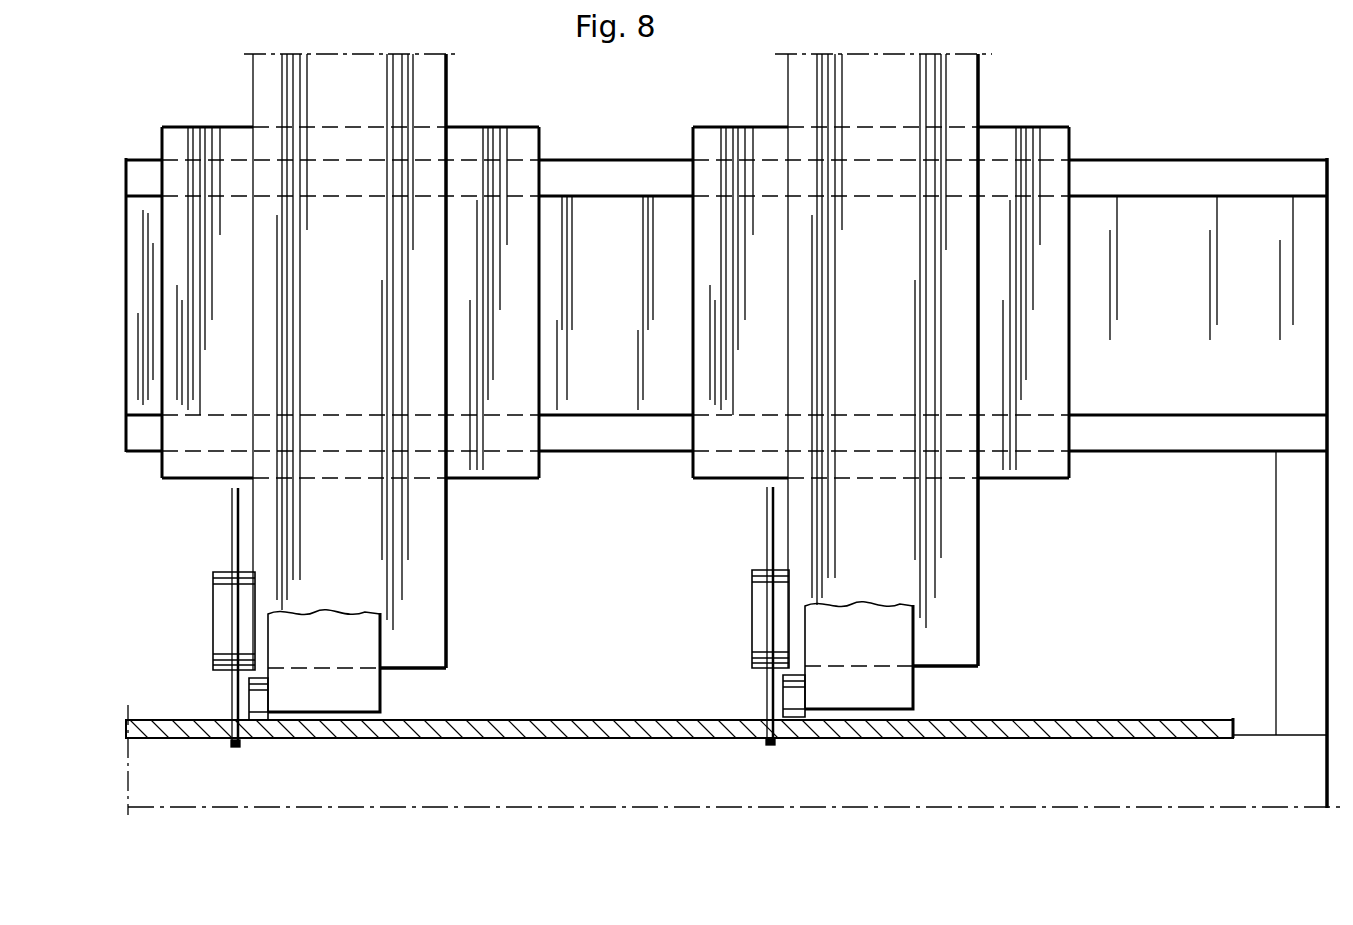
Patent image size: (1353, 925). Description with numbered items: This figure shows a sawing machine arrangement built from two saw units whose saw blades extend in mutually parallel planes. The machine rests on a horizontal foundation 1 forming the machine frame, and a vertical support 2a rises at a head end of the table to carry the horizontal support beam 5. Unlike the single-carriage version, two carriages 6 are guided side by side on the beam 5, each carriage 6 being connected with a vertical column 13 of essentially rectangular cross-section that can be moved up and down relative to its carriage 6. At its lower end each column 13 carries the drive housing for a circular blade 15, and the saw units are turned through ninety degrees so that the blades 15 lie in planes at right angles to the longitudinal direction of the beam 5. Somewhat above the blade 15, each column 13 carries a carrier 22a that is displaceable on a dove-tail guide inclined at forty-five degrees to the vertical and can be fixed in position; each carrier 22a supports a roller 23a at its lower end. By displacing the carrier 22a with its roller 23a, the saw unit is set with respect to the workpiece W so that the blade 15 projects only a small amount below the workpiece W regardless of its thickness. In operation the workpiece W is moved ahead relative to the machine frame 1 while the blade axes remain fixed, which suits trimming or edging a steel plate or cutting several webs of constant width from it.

The horizontal foundation 1 is at (1262, 745).
The vertical support 2a is at (1288, 595).
The horizontal support beam 5 is at (1152, 442).
The carriage 6 is at (1045, 495).
The vertical column 13 is at (997, 604).
The circular blade 15 is at (765, 697).
The carrier 22a is at (930, 695).
The roller 23a is at (801, 750).
The workpiece W is at (188, 730).